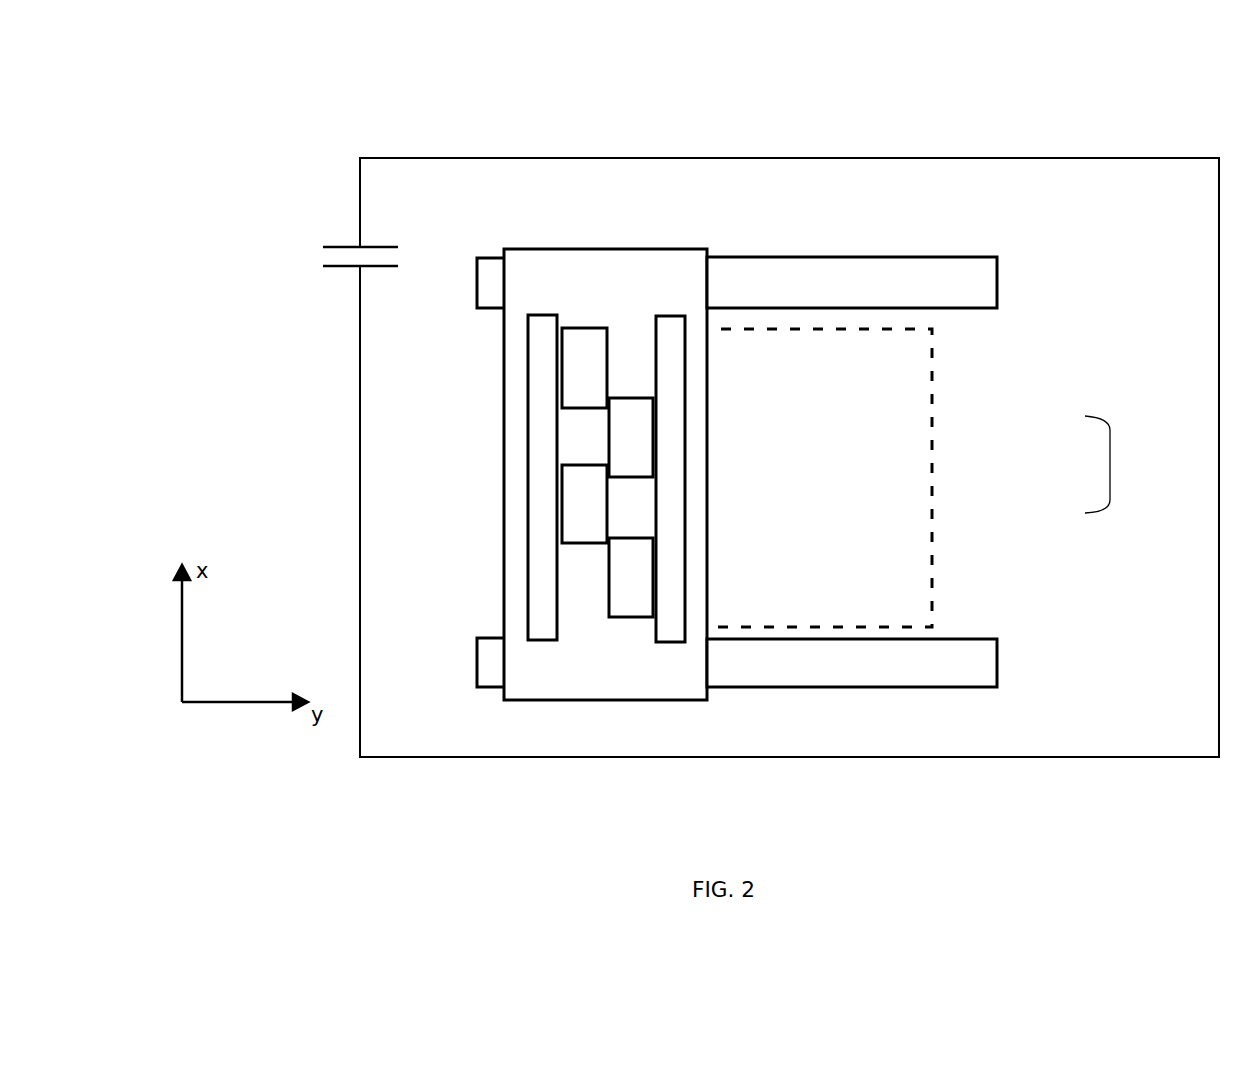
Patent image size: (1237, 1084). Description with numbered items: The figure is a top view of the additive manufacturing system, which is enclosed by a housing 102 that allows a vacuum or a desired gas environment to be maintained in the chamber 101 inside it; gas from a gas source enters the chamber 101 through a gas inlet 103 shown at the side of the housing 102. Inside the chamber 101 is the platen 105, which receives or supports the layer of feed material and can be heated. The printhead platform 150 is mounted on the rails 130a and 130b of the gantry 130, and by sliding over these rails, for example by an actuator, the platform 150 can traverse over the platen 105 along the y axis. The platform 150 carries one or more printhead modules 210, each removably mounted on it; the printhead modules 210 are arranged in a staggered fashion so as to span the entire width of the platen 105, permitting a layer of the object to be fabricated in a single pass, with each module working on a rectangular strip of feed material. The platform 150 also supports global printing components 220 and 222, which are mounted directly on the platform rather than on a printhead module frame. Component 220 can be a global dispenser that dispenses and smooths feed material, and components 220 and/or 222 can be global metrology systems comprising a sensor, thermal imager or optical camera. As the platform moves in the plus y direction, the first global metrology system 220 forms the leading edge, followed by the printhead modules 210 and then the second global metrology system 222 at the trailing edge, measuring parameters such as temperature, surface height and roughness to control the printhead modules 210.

The chamber 101 is at (1044, 205).
The housing 102 is at (783, 157).
The gas inlet 103 is at (332, 259).
The platen 105 is at (780, 478).
The gantry 130 is at (1110, 463).
The rail 130a is at (995, 298).
The rail 130b is at (990, 647).
The printhead platform 150 is at (665, 692).
The printhead module 210 is at (573, 364).
The global printing component 220 is at (674, 562).
The global printing component 222 is at (542, 560).